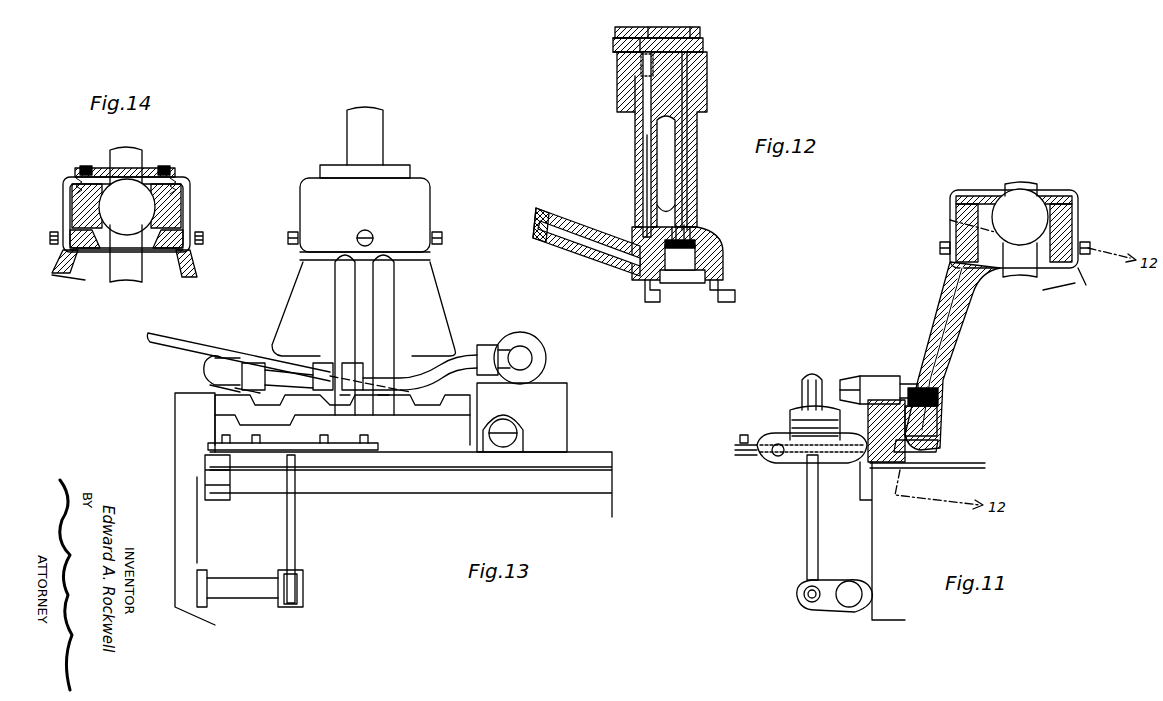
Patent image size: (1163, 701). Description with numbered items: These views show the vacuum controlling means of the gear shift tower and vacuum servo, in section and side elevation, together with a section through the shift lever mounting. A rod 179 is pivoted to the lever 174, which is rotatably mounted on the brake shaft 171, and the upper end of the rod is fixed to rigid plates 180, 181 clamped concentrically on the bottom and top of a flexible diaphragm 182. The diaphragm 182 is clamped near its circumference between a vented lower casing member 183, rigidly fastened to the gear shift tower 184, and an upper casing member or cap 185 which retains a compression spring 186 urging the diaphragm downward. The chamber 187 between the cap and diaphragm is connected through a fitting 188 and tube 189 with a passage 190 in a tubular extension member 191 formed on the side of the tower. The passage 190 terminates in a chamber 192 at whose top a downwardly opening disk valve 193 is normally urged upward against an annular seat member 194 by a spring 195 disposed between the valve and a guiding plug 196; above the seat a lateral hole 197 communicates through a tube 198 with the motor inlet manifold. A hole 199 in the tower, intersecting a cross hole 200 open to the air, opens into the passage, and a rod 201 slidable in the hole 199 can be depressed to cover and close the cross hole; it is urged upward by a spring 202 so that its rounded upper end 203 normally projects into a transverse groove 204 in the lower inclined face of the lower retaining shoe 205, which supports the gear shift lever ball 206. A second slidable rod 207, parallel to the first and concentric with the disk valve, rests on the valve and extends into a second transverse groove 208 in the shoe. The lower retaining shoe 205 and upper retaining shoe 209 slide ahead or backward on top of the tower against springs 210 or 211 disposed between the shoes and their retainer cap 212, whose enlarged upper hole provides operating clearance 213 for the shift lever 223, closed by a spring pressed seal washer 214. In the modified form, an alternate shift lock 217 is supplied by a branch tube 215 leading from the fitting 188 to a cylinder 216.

In FIG. 13, the brake shaft 171 is at (245, 588).
In FIG. 11, the brake shaft 171 is at (850, 600).
In FIG. 13, the lever 174 is at (303, 600).
In FIG. 11, the lever 174 is at (820, 600).
In FIG. 13, the rod 179 is at (295, 520).
In FIG. 11, the rod 179 is at (807, 515).
In FIG. 11, the rigid plate 180 is at (800, 460).
In FIG. 11, the rigid plate 181 is at (775, 458).
In FIG. 11, the flexible diaphragm 182 is at (840, 460).
In FIG. 11, the vented lower casing member 183 is at (757, 455).
In FIG. 13, the gear shift tower 184 is at (310, 305).
In FIG. 12, the gear shift tower 184 is at (707, 66).
In FIG. 11, the gear shift tower 184 is at (938, 292).
In FIG. 13, the upper casing member or cap 185 is at (265, 412).
In FIG. 11, the upper casing member or cap 185 is at (760, 436).
In FIG. 11, the compression spring 186 is at (792, 420).
In FIG. 11, the chamber 187 is at (840, 440).
In FIG. 13, the fitting 188 is at (275, 375).
In FIG. 11, the fitting 188 is at (815, 375).
In FIG. 13, the tube 189 is at (205, 368).
In FIG. 12, the passage 190 is at (605, 238).
In FIG. 13, the tubular extension member 191 is at (215, 386).
In FIG. 12, the tubular extension member 191 is at (560, 240).
In FIG. 12, the chamber 192 is at (695, 245).
In FIG. 11, the chamber 192 is at (938, 428).
In FIG. 12, the disk valve 193 is at (690, 232).
In FIG. 11, the disk valve 193 is at (940, 405).
In FIG. 12, the annular seat member 194 is at (684, 230).
In FIG. 12, the spring 195 is at (695, 260).
In FIG. 12, the guiding plug 196 is at (645, 270).
In FIG. 11, the lateral hole 197 is at (905, 388).
In FIG. 13, the tube 198 is at (193, 340).
In FIG. 11, the tube 198 is at (857, 378).
In FIG. 12, the hole 199 is at (643, 165).
In FIG. 12, the cross hole 200 is at (643, 130).
In FIG. 12, the rod 201 is at (635, 98).
In FIG. 12, the spring 202 is at (641, 66).
In FIG. 12, the rounded upper end 203 is at (613, 45).
In FIG. 12, the transverse groove 204 is at (648, 27).
In FIG. 14, the lower retaining shoe 205 is at (183, 220).
In FIG. 12, the lower retaining shoe 205 is at (703, 46).
In FIG. 11, the lower retaining shoe 205 is at (1072, 226).
In FIG. 14, the ball 206 is at (183, 260).
In FIG. 11, the ball 206 is at (1025, 205).
In FIG. 12, the second slidable rod 207 is at (687, 85).
In FIG. 11, the second slidable rod 207 is at (948, 318).
In FIG. 12, the second transverse groove 208 is at (690, 27).
In FIG. 11, the second transverse groove 208 is at (950, 222).
In FIG. 14, the upper retaining shoe 209 is at (97, 176).
In FIG. 12, the upper retaining shoe 209 is at (700, 33).
In FIG. 11, the upper retaining shoe 209 is at (1072, 200).
In FIG. 14, the spring 210 is at (60, 178).
In FIG. 14, the spring 211 is at (185, 182).
In FIG. 14, the retainer cap 212 is at (190, 197).
In FIG. 13, the retainer cap 212 is at (425, 195).
In FIG. 11, the retainer cap 212 is at (958, 190).
In FIG. 14, the operating clearance 213 is at (166, 166).
In FIG. 14, the spring pressed seal washer 214 is at (84, 166).
In FIG. 13, the branch tube 215 is at (420, 370).
In FIG. 13, the cylinder 216 is at (535, 338).
In FIG. 13, the alternate form of shift lock 217 is at (550, 390).
In FIG. 14, the shift lever 223 is at (131, 155).
In FIG. 13, the shift lever 223 is at (383, 140).
In FIG. 11, the shift lever 223 is at (1021, 190).